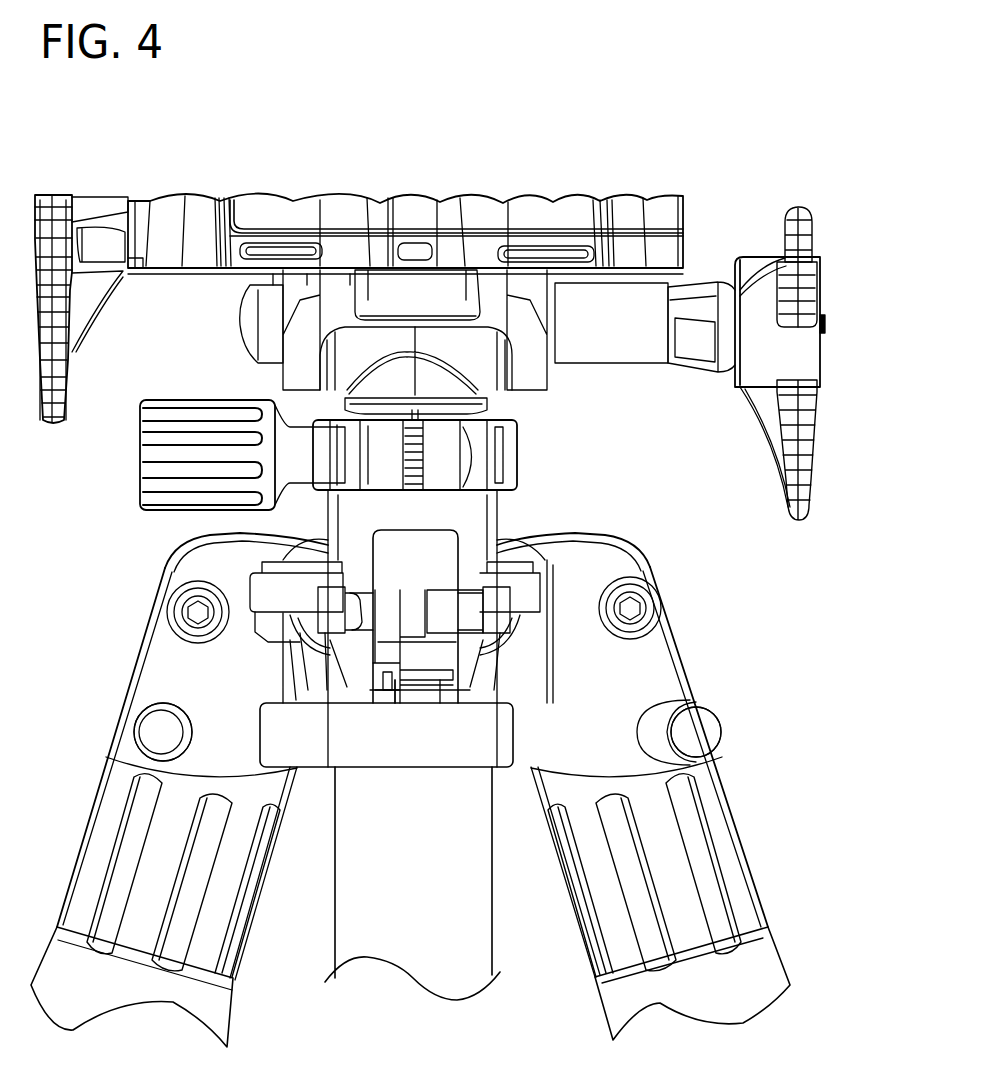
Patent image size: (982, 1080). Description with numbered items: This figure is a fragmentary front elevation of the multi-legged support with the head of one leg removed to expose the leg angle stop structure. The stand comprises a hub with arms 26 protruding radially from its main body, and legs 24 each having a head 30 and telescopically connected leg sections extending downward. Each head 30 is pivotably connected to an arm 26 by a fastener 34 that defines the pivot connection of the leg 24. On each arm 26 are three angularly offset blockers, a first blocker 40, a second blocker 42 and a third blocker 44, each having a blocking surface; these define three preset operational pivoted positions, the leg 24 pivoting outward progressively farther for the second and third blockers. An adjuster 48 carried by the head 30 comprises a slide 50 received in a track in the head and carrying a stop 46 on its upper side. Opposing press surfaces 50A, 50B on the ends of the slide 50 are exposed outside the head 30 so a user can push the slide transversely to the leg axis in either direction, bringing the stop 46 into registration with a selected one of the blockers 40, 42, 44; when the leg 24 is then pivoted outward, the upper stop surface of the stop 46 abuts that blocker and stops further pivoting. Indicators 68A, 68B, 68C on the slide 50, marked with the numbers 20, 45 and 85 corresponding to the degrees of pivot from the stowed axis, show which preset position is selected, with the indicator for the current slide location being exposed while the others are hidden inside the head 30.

The indicator number 20 is at (462, 800).
The leg 24 is at (60, 885).
The arm 26 is at (545, 545).
The head 30 is at (160, 652).
The fastener 34 is at (642, 607).
The first blocker 40 is at (392, 640).
The second blocker 42 is at (415, 645).
The third blocker 44 is at (432, 612).
The indicator number 45 is at (405, 795).
The stop 46 is at (430, 705).
The adjuster 48 is at (312, 775).
The slide 50 is at (285, 710).
The press surface 50A is at (260, 752).
The press surface 50B is at (712, 728).
The indicator 68A is at (425, 765).
The indicator 68B is at (380, 760).
The indicator 68C is at (362, 765).
The indicator number 85 is at (390, 810).